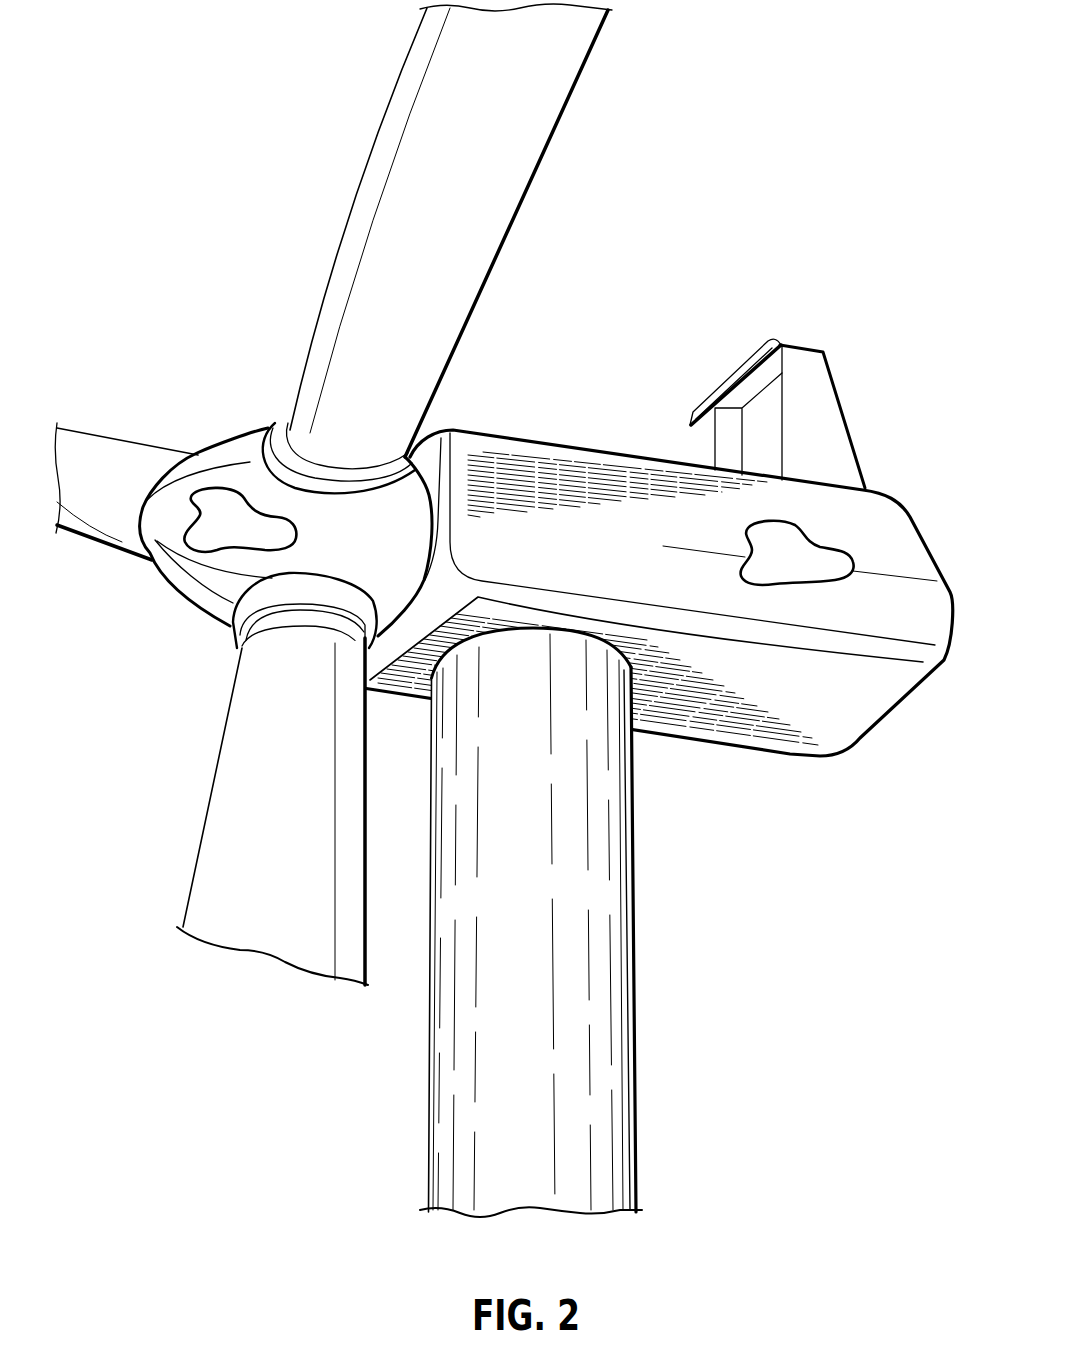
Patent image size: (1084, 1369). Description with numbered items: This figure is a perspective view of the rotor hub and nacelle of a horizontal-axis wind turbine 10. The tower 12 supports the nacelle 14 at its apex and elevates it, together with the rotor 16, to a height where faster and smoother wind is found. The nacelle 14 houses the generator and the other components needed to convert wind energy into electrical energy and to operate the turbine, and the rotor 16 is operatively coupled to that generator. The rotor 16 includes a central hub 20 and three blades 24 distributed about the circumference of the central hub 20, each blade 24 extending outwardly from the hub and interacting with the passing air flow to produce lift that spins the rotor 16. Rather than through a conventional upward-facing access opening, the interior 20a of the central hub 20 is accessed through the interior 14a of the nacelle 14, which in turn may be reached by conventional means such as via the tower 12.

The wind turbine 10 is at (503, 610).
The tower 12 is at (644, 913).
The nacelle 14 is at (658, 547).
The interior of the nacelle 14a is at (797, 553).
The rotor 16 is at (274, 511).
The central hub 20 is at (285, 511).
The interior of the central hub 20a is at (240, 520).
The blade 24 is at (560, 115).